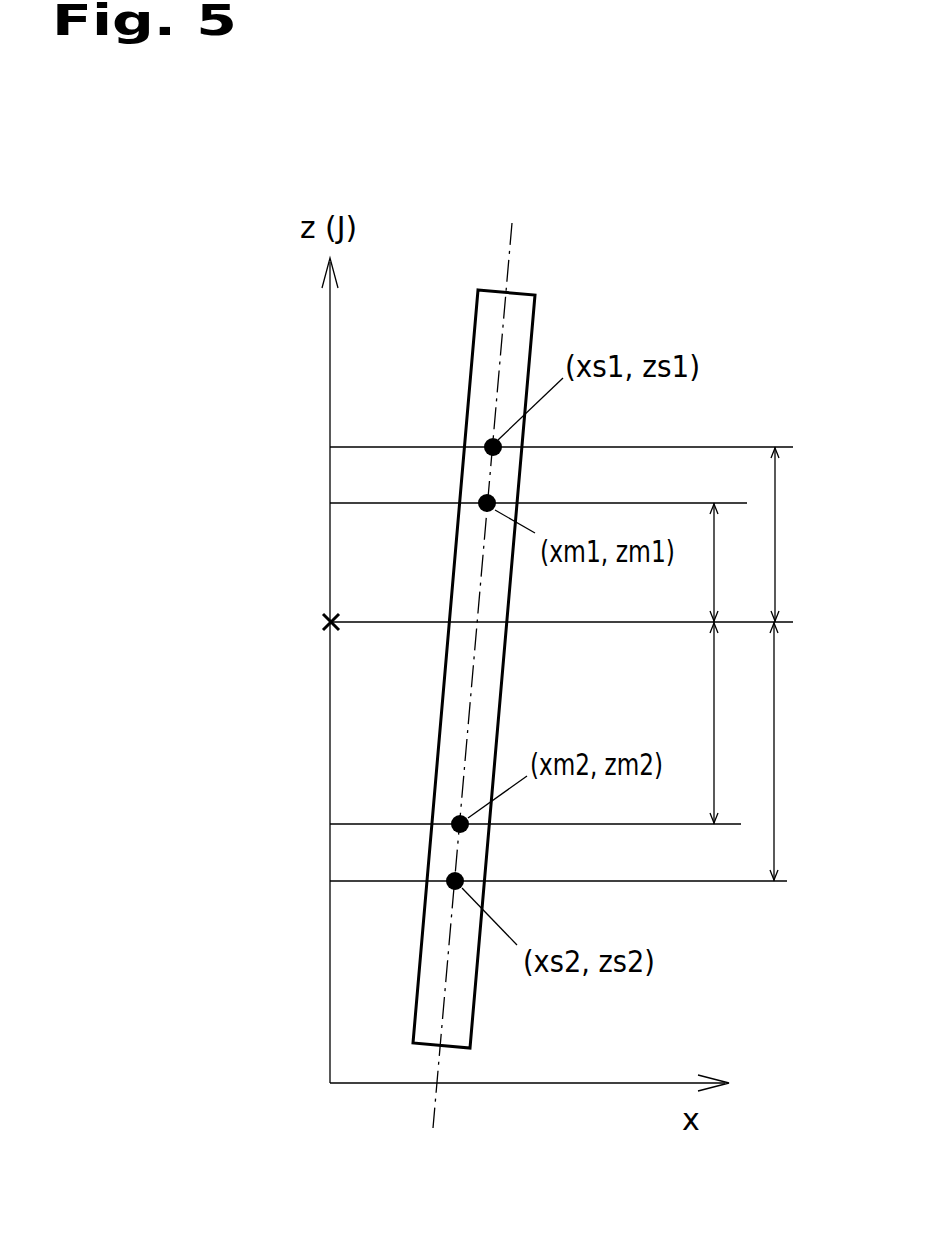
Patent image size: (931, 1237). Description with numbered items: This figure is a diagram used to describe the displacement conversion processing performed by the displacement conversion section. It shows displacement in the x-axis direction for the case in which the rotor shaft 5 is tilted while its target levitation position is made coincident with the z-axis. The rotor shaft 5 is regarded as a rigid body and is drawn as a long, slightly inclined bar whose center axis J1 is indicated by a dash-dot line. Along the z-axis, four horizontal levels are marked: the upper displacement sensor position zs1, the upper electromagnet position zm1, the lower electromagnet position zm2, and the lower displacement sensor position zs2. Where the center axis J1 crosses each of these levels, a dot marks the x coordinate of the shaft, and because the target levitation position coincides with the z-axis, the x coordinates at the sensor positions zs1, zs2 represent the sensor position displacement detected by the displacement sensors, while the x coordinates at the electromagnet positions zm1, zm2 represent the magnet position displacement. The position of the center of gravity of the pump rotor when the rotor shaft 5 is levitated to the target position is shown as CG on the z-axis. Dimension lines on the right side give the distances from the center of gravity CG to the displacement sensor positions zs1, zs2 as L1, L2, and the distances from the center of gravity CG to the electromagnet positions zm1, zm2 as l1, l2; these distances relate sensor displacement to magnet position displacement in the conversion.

The rotor shaft 5 is at (518, 307).
The center axis J1 is at (512, 232).
The upper displacement sensor position zs1 is at (330, 447).
The upper electromagnet position zm1 is at (330, 503).
The lower electromagnet position zm2 is at (330, 824).
The lower displacement sensor position zs2 is at (330, 881).
The position of the center of gravity CG is at (532, 621).
The distance from the center of gravity to the upper electromagnet position l1 is at (730, 562).
The distance from the center of gravity to the upper displacement sensor position L1 is at (794, 534).
The distance from the center of gravity to the lower electromagnet position l2 is at (730, 723).
The distance from the center of gravity to the lower displacement sensor position L2 is at (794, 751).